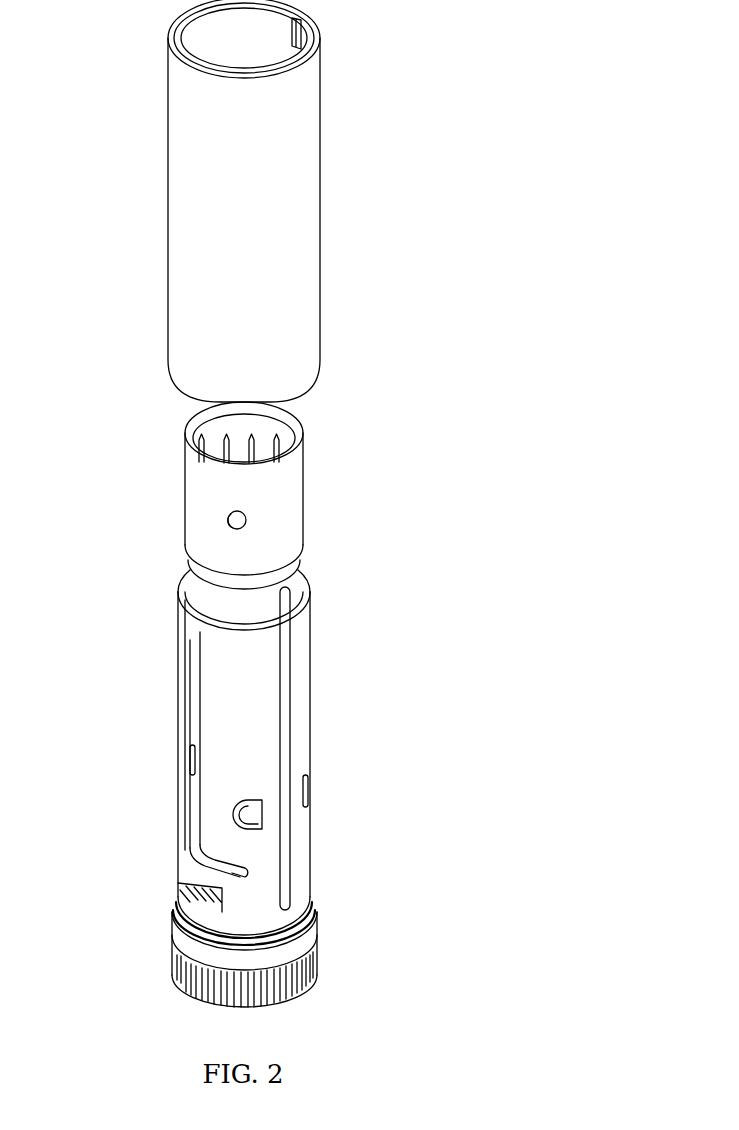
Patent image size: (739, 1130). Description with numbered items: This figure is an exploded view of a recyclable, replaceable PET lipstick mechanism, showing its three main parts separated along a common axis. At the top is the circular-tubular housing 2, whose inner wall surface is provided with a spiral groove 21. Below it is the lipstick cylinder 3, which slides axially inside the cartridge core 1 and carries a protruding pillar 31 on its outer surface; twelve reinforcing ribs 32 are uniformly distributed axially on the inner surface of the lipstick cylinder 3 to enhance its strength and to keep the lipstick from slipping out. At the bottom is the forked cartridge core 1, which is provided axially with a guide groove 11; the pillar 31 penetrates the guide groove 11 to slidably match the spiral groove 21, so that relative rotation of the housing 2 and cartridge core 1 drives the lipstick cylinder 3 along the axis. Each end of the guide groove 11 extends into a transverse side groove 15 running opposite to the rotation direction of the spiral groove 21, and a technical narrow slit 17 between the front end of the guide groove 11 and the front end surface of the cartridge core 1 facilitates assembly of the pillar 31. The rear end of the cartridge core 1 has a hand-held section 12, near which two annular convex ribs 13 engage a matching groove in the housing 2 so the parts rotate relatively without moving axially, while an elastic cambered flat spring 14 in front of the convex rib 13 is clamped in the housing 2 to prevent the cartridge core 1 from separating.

The cartridge core 1 is at (233, 726).
The housing 2 is at (232, 201).
The lipstick cylinder 3 is at (225, 469).
The guide groove 11 is at (182, 667).
The hand-held section 12 is at (297, 938).
The annular convex rib 13 is at (313, 907).
The flat spring 14 is at (178, 884).
The side groove 15 is at (222, 866).
The narrow slit 17 is at (290, 583).
The spiral groove 21 is at (301, 34).
The pillar 31 is at (248, 520).
The reinforcing rib 32 is at (255, 440).